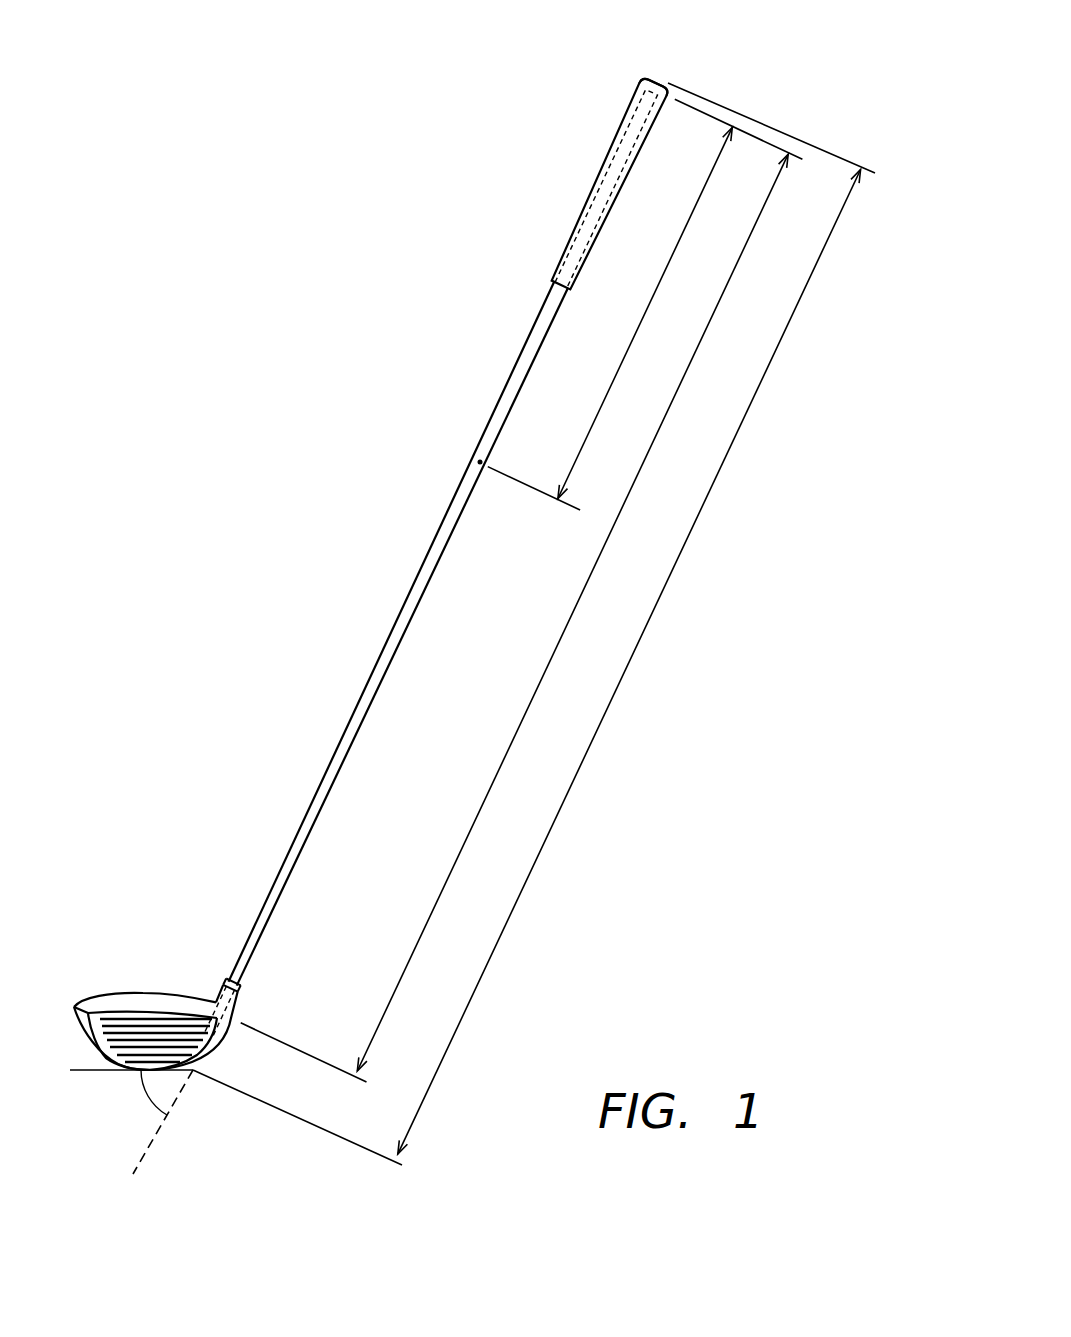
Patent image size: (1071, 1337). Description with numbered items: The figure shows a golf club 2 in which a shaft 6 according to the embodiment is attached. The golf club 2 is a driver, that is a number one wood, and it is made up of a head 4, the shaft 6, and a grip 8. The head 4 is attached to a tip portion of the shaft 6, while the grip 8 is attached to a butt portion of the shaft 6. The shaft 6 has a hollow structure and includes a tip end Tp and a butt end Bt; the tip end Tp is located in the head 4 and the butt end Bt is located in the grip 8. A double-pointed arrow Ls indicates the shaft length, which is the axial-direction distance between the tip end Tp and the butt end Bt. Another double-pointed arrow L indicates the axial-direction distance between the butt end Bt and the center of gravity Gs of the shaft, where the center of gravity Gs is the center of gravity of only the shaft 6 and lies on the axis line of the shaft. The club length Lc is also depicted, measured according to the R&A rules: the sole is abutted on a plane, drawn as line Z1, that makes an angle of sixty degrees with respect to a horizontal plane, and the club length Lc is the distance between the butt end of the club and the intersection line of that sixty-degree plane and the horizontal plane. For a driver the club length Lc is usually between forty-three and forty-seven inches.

The golf club 2 is at (545, 44).
The head 4 is at (148, 1007).
The shaft 6 is at (378, 677).
The grip 8 is at (628, 148).
The butt end Bt is at (655, 76).
The center of gravity of the shaft Gs is at (478, 462).
The tip end Tp is at (228, 1038).
The axial-direction distance between the butt end and the center of gravity L is at (645, 312).
The shaft length Ls is at (572, 612).
The club length Lc is at (629, 662).
The reference line at 60 degrees Z1 is at (147, 1163).